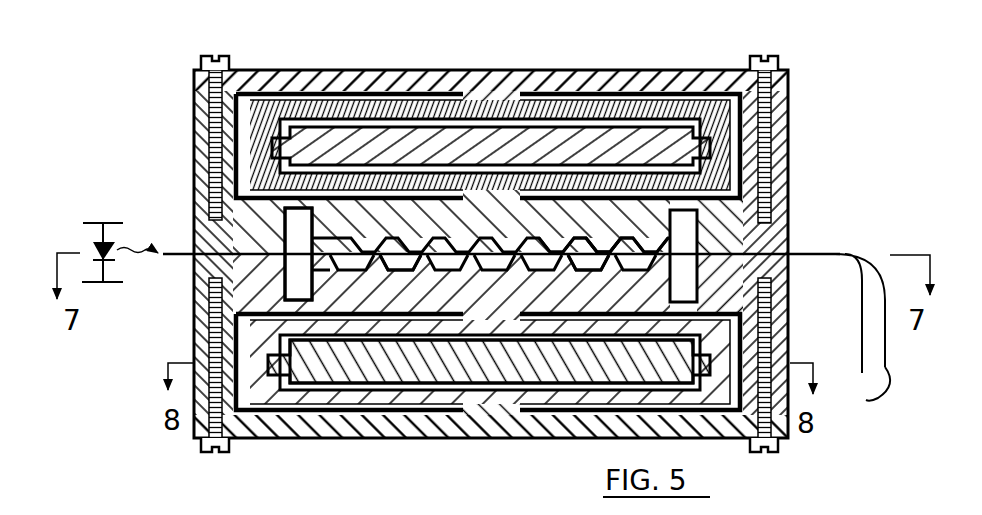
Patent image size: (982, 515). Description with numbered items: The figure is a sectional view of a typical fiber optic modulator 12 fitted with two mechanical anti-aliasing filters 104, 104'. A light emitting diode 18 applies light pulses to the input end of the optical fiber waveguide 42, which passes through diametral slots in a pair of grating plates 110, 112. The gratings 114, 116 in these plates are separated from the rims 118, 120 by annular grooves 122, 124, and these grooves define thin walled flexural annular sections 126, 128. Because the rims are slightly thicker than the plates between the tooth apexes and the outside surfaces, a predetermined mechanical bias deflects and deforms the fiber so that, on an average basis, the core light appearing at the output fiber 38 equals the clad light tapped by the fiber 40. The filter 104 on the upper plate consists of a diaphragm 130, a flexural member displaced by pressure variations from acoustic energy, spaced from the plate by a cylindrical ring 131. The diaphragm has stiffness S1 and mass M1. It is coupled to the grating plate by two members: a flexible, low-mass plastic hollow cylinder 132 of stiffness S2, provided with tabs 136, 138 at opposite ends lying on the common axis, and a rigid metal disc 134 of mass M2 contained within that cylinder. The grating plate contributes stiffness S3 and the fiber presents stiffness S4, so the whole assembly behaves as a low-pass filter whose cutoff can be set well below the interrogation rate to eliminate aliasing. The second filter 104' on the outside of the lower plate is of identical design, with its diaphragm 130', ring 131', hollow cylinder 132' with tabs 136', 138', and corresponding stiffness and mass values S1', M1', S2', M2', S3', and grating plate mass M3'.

The fiber optic modulator 12 is at (798, 102).
The light emitting diode 18 is at (93, 242).
The output fiber 38 is at (877, 397).
The clad light output fiber 40 is at (862, 330).
The optical fiber waveguide 42 is at (185, 253).
The mechanical anti-aliasing filter 104 is at (175, 138).
The mechanical anti-aliasing filter 104' is at (172, 365).
The grating plate 110 is at (788, 227).
The grating plate 112 is at (773, 273).
The grating 114 is at (397, 240).
The grating 116 is at (472, 280).
The rim 118 is at (193, 207).
The rim 120 is at (193, 273).
The annular groove 122 is at (282, 231).
The annular groove 124 is at (272, 283).
The thin walled flexural annular section 126 is at (312, 208).
The thin walled flexural annular section 128 is at (297, 305).
The diaphragm 130 is at (491, 60).
The diaphragm 130' is at (491, 456).
The cylindrical ring 131 is at (794, 172).
The cylindrical ring 131' is at (797, 334).
The hollow cylinder member 132 is at (490, 109).
The hollow cylinder member 132' is at (490, 401).
The metal disc 134 is at (478, 159).
The tab 136 is at (517, 65).
The tab 136' is at (508, 441).
The tab 138 is at (491, 209).
The tab 138' is at (474, 341).
The diaphragm stiffness S1 is at (491, 59).
The diaphragm mass M1 is at (491, 59).
The hollow cylinder stiffness S2 is at (490, 107).
The disc mass M2 is at (491, 146).
The grating plate stiffness S3 is at (627, 229).
The optical fiber stiffness S4 is at (587, 250).
The grating plate mass M3' is at (500, 281).
The diaphragm stiffness S1' is at (491, 447).
The diaphragm mass M1' is at (491, 447).
The hollow cylinder stiffness S2' is at (491, 361).
The disc mass M2' is at (489, 361).
The grating plate stiffness S3' is at (489, 361).